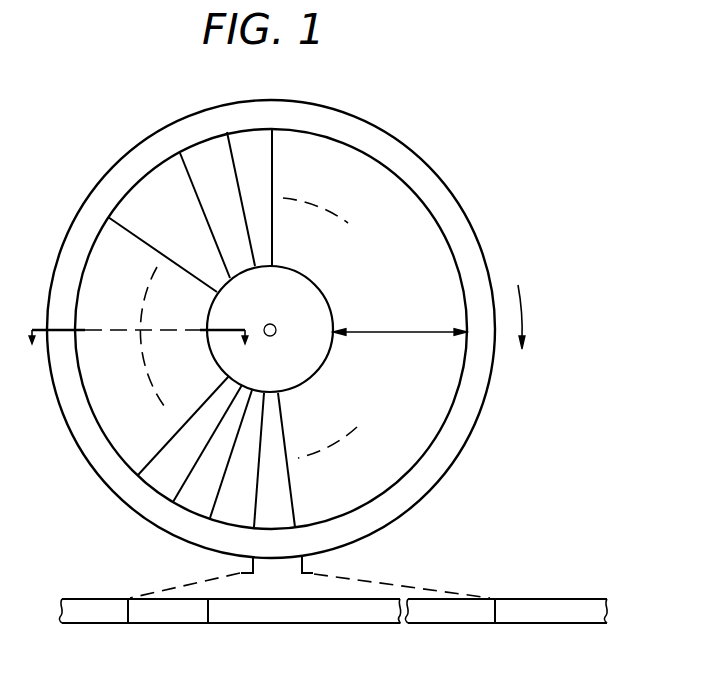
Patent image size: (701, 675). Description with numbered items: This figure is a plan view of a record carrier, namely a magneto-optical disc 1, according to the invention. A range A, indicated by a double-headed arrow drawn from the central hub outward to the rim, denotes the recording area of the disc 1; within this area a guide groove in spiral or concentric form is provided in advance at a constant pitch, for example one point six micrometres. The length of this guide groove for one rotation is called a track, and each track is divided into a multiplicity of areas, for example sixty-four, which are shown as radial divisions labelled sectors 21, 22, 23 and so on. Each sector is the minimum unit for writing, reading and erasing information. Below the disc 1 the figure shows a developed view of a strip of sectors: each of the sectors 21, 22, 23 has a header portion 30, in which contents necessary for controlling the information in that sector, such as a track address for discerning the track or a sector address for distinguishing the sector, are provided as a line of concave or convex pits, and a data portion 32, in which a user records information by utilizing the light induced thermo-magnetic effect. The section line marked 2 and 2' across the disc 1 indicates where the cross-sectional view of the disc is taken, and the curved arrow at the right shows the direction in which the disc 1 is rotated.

The magneto-optical disc 1 is at (415, 160).
The sector 21 is at (256, 140).
The sector 22 is at (200, 150).
The sector 23 is at (155, 178).
The section line 2 is at (110, 354).
The section line 2' is at (228, 354).
The range A is at (400, 322).
The header portion 30 is at (172, 623).
The data portion 32 is at (98, 623).